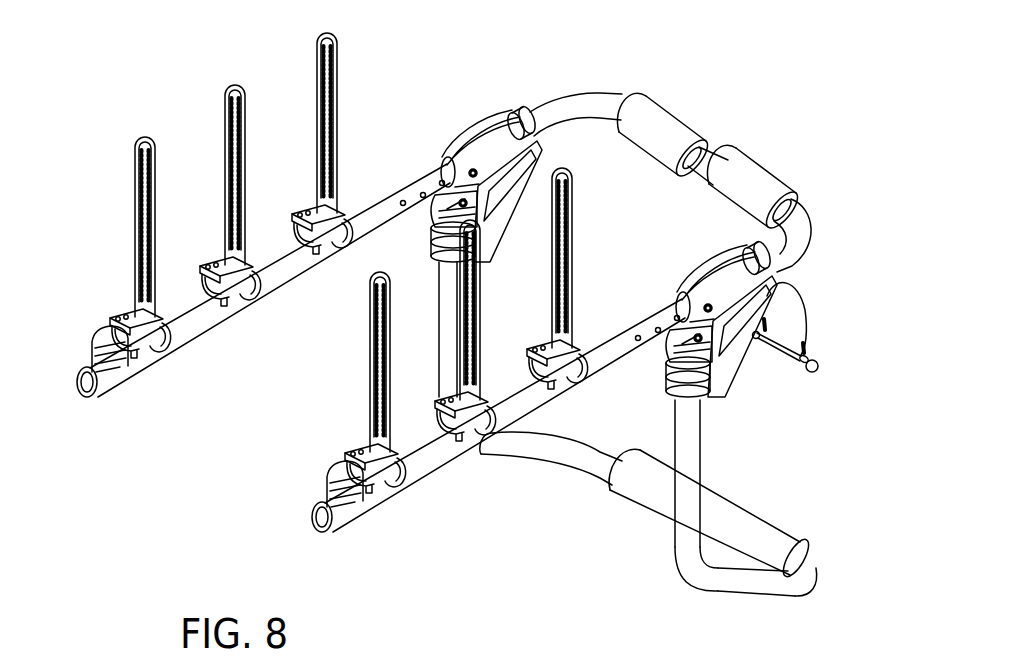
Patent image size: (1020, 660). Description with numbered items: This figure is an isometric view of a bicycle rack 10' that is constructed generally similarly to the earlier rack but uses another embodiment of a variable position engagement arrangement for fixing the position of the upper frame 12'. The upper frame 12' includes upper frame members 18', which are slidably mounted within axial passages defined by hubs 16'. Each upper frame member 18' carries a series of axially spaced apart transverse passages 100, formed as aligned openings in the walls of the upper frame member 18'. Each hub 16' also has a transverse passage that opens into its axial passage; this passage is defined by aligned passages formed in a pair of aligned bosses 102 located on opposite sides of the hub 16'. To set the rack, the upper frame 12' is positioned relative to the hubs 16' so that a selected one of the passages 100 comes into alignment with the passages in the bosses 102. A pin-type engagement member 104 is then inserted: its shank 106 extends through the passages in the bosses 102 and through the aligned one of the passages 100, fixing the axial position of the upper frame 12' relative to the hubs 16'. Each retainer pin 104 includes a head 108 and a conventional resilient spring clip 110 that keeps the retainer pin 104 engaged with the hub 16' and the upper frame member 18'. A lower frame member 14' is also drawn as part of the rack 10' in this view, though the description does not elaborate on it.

The bicycle rack 10' is at (459, 336).
The upper frame 12' is at (670, 155).
The lower frame member 14' is at (628, 450).
The hub 16' is at (604, 232).
The upper frame member 18' is at (381, 282).
The transverse passages 100 is at (440, 182).
The bosses 102 is at (699, 341).
The pin-type engagement member 104 is at (808, 369).
The shank 106 is at (782, 354).
The head 108 is at (816, 369).
The resilient spring clip 110 is at (797, 290).